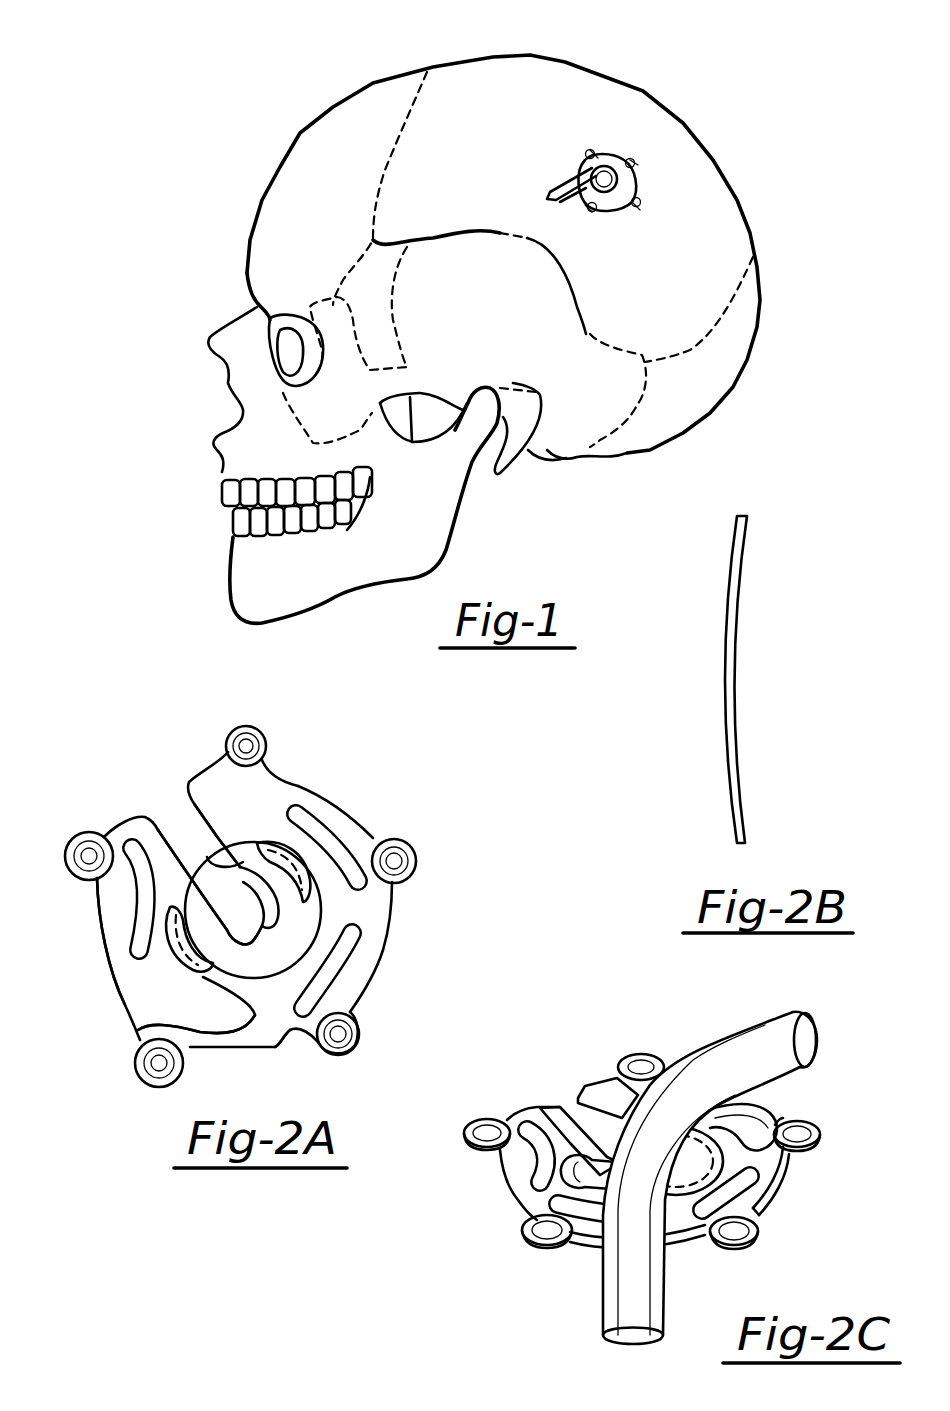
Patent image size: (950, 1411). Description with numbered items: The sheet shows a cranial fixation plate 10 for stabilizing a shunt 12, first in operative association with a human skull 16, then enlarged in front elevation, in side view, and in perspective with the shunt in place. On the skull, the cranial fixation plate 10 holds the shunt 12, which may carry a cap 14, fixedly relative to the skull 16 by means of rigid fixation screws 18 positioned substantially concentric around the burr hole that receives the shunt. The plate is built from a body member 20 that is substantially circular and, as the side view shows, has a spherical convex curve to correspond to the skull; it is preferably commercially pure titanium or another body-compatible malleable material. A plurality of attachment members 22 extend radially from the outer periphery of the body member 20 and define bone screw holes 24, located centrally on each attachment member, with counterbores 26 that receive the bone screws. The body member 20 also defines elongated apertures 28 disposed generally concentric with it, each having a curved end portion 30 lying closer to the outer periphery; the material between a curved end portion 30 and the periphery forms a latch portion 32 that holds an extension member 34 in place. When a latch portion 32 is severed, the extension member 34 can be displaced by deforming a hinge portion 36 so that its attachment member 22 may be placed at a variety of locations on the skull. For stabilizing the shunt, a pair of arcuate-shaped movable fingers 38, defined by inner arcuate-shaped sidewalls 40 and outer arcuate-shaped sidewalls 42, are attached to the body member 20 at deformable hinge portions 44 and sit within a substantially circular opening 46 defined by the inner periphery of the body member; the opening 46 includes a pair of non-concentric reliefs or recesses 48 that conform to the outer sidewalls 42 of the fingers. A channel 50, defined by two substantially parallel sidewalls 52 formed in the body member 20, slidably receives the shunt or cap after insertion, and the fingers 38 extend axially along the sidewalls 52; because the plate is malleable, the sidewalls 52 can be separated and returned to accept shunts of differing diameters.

In FIG. 1, the cranial fixation plate 10 is at (610, 208).
In FIG. 2B, the cranial fixation plate 10 is at (730, 611).
In FIG. 2A, the cranial fixation plate 10 is at (326, 781).
In FIG. 2C, the cranial fixation plate 10 is at (808, 1180).
In FIG. 1, the shunt 12 is at (569, 208).
In FIG. 2C, the shunt 12 is at (640, 1307).
In FIG. 1, the cap 14 is at (636, 190).
In FIG. 1, the skull 16 is at (603, 112).
In FIG. 1, the rigid fixation screws 18 is at (573, 176).
In FIG. 2A, the body member 20 is at (287, 792).
In FIG. 2A, the attachment members 22 is at (400, 884).
In FIG. 2C, the attachment members 22 is at (735, 1250).
In FIG. 2A, the bone screw holes 24 is at (390, 862).
In FIG. 2C, the bone screw holes 24 is at (768, 1228).
In FIG. 2A, the counterbores 26 is at (404, 869).
In FIG. 2C, the counterbores 26 is at (818, 1138).
In FIG. 2A, the elongated apertures 28 is at (360, 963).
In FIG. 2C, the elongated apertures 28 is at (765, 1118).
In FIG. 2A, the curved end portion 30 is at (330, 1027).
In FIG. 2A, the latch portions 32 is at (284, 1033).
In FIG. 2A, the extension members 34 is at (347, 990).
In FIG. 2A, the hinge portion 36 is at (372, 934).
In FIG. 2A, the arcuate-shaped movable fingers 38 is at (240, 940).
In FIG. 2A, the inner arcuate-shaped sidewalls 40 is at (249, 897).
In FIG. 2A, the outer arcuate-shaped sidewalls 42 is at (283, 895).
In FIG. 2A, the deformable hinge portions 44 is at (216, 851).
In FIG. 2A, the circular opening 46 is at (208, 984).
In FIG. 2C, the circular opening 46 is at (770, 1196).
In FIG. 2A, the non-concentric reliefs or recesses 48 is at (145, 987).
In FIG. 2C, the non-concentric reliefs or recesses 48 is at (540, 1209).
In FIG. 2A, the channel 50 is at (163, 797).
In FIG. 2C, the channel 50 is at (560, 1100).
In FIG. 2A, the sidewalls 52 is at (157, 823).
In FIG. 2C, the sidewalls 52 is at (571, 1098).